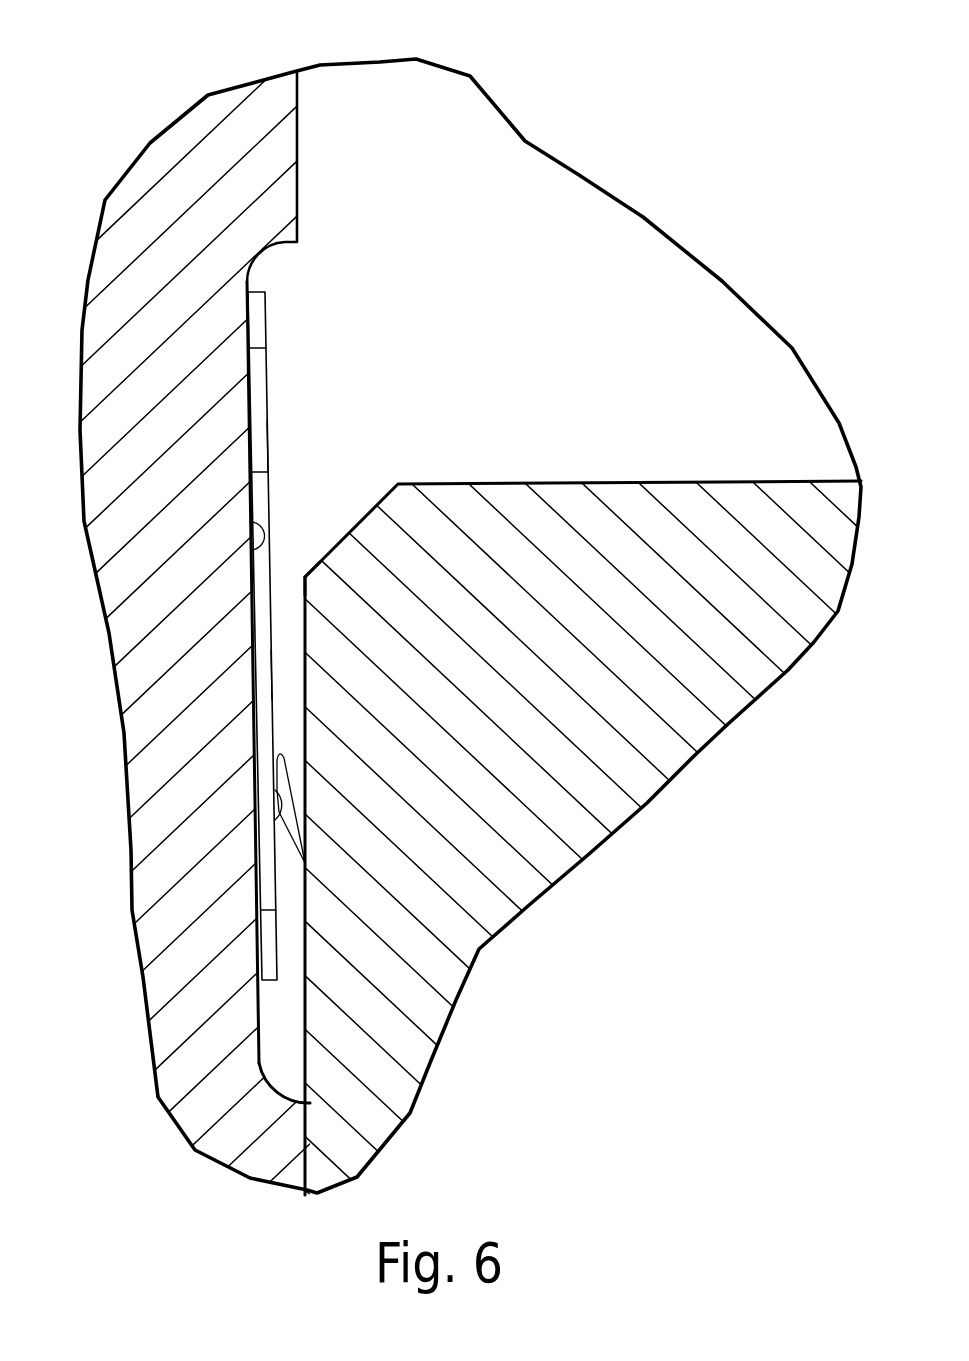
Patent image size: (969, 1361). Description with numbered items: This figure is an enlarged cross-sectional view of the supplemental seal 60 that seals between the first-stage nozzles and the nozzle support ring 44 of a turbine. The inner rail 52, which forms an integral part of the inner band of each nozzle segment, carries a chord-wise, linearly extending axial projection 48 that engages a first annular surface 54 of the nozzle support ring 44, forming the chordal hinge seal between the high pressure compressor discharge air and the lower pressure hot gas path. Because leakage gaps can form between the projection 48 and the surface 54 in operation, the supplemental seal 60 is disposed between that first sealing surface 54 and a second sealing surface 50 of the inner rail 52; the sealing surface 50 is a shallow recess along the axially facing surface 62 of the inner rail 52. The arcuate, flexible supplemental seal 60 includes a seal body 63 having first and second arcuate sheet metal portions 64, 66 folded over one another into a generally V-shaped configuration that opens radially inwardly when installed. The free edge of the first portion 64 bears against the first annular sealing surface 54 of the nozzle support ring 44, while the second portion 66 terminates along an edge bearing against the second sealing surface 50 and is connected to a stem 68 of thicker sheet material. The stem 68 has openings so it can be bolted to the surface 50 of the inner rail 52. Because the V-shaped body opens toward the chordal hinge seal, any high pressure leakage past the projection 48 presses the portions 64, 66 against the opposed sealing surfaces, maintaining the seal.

The nozzle support ring 44 is at (503, 909).
The axial projection 48 is at (225, 1143).
The axially facing surface 50 is at (252, 348).
The inner rail 52 is at (141, 395).
The first annular surface 54 is at (298, 586).
The supplemental seal 60 is at (384, 389).
The axially facing surface of the inner rail 62 is at (295, 125).
The seal body 63 is at (267, 675).
The first arcuate sheet metal portion 64 is at (290, 788).
The second arcuate sheet metal portion 66 is at (276, 828).
The stem 68 is at (265, 443).